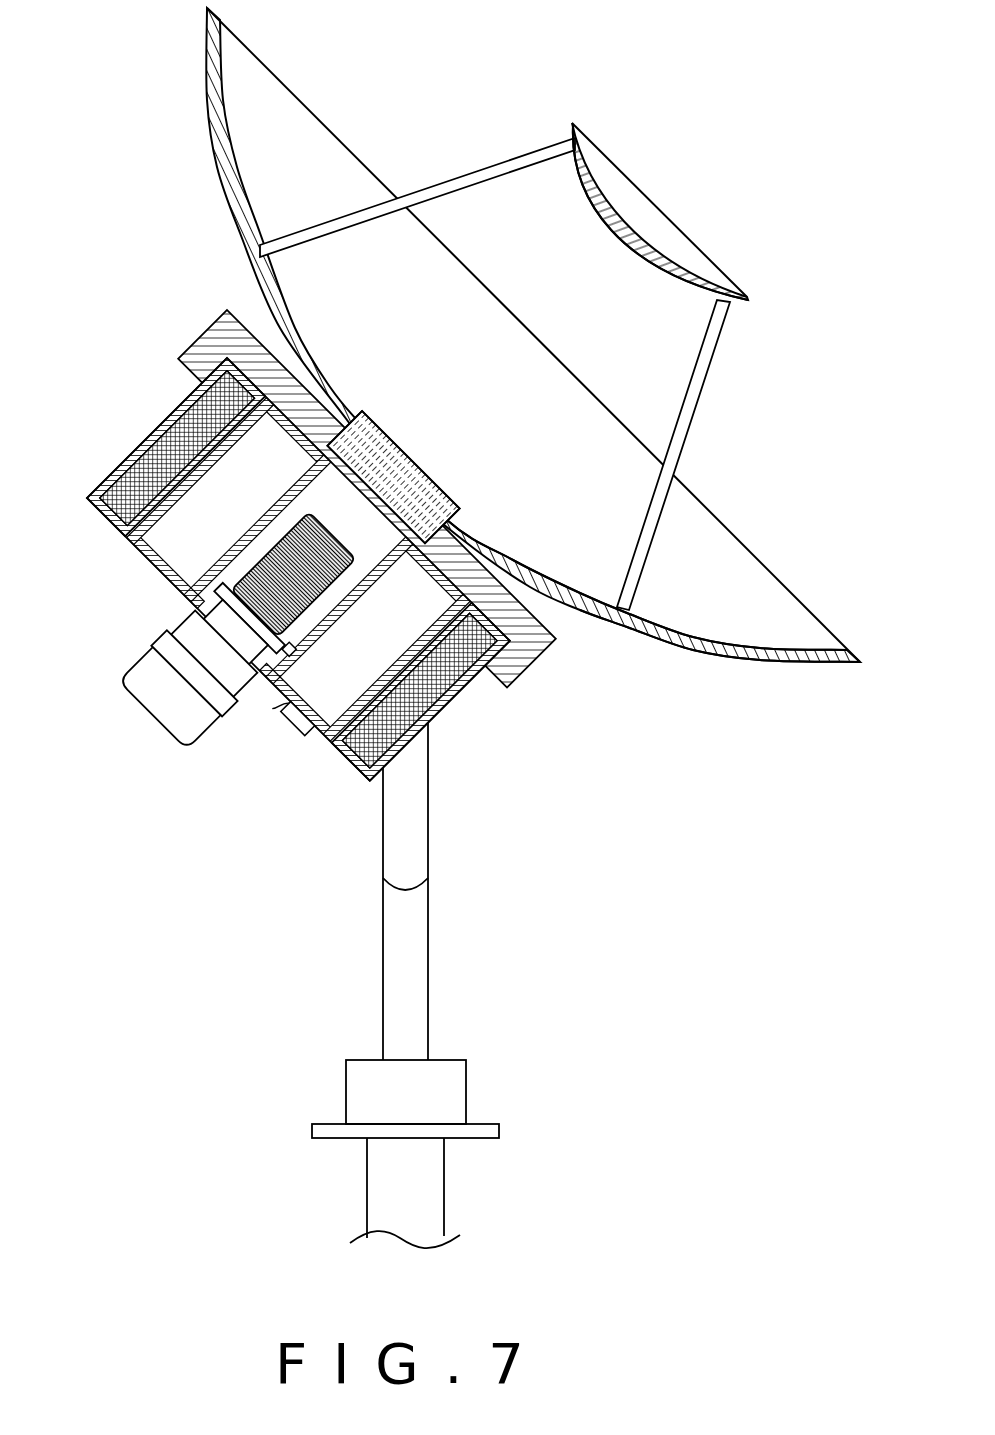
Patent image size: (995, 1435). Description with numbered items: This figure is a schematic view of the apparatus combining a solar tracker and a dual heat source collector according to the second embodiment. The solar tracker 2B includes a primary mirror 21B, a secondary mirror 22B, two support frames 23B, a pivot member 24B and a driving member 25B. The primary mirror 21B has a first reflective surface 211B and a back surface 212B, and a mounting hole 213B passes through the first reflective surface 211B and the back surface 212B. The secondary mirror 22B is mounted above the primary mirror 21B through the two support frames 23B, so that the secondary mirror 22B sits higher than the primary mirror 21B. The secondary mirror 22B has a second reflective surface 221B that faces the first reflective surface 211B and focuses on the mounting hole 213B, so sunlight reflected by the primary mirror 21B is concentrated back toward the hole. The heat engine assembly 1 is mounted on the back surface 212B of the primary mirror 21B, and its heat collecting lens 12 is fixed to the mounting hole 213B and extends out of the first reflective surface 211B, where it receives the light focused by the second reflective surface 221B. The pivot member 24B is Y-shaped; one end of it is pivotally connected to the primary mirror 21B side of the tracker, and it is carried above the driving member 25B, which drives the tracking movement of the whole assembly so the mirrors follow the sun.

The heat engine assembly 1 is at (133, 427).
The heat collecting lens 12 is at (367, 452).
The solar tracker 2B is at (712, 140).
The primary mirror 21B is at (850, 662).
The first reflective surface 211B is at (753, 640).
The back surface 212B is at (742, 660).
The mounting hole 213B is at (550, 567).
The secondary mirror 22B is at (693, 283).
The second reflective surface 221B is at (703, 300).
The support frame 23B is at (425, 193).
The pivot member 24B is at (410, 995).
The driving member 25B is at (443, 1100).